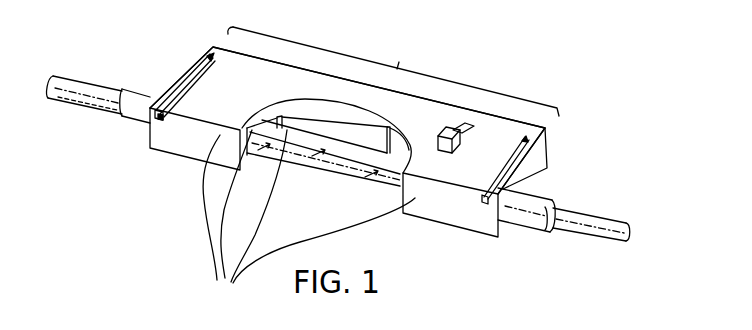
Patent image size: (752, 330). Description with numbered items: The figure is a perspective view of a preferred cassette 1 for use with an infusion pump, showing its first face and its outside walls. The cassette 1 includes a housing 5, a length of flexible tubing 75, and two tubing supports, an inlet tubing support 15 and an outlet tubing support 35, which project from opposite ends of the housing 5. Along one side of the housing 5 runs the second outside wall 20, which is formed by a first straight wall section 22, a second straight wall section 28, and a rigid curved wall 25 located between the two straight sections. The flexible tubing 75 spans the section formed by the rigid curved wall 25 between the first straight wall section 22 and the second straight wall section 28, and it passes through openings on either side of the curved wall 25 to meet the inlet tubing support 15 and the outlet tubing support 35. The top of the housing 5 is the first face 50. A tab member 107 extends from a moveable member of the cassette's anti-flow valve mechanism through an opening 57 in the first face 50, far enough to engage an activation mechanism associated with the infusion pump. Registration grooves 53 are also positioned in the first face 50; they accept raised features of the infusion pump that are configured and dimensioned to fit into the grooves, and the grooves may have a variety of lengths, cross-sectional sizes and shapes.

The cassette 1 is at (536, 74).
The housing 5 is at (393, 71).
The inlet tubing support 15 is at (533, 222).
The second outside wall 20 is at (305, 220).
The first straight wall section 22 is at (198, 146).
The rigid curved wall 25 is at (351, 131).
The second straight wall section 28 is at (458, 213).
The outlet tubing support 35 is at (124, 114).
The first face 50 is at (242, 103).
The registration grooves 53 is at (190, 79).
The opening 57 is at (462, 125).
The flexible tubing 75 is at (336, 163).
The tab member 107 is at (447, 131).